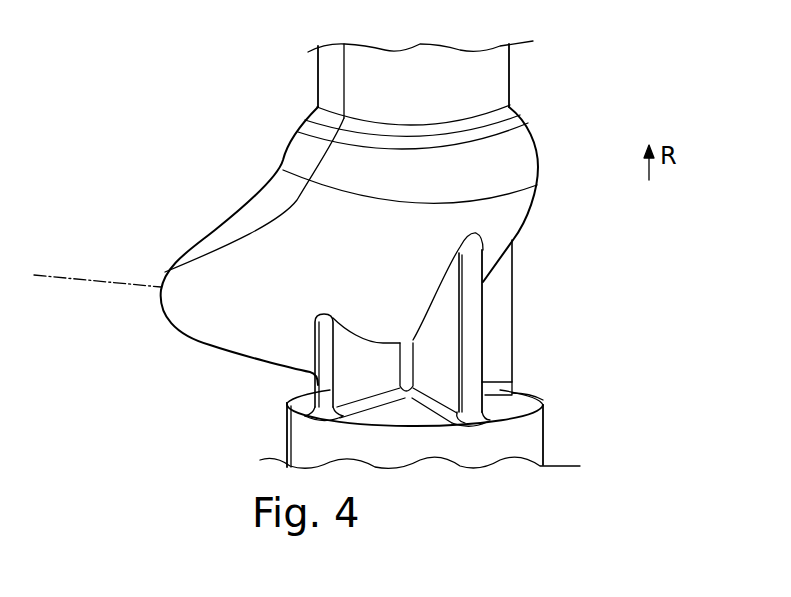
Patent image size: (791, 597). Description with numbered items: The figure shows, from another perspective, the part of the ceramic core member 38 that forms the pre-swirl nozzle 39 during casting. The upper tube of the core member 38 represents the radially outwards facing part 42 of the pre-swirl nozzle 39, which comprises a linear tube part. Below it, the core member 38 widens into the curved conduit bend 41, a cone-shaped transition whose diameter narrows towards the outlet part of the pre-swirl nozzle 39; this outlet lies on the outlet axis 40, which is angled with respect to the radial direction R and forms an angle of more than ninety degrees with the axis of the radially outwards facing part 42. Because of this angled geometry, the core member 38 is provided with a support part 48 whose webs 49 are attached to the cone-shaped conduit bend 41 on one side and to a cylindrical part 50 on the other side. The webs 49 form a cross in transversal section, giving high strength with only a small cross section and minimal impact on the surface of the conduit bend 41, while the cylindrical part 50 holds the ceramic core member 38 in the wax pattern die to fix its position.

The core member 38 is at (513, 73).
The pre-swirl nozzle 39 is at (523, 128).
The outlet axis 40 is at (80, 277).
The conduit bend 41 is at (507, 207).
The radially outwards facing part 42 is at (348, 72).
The support part 48 is at (513, 327).
The webs 49 is at (345, 378).
The cylindrical part 50 is at (530, 436).